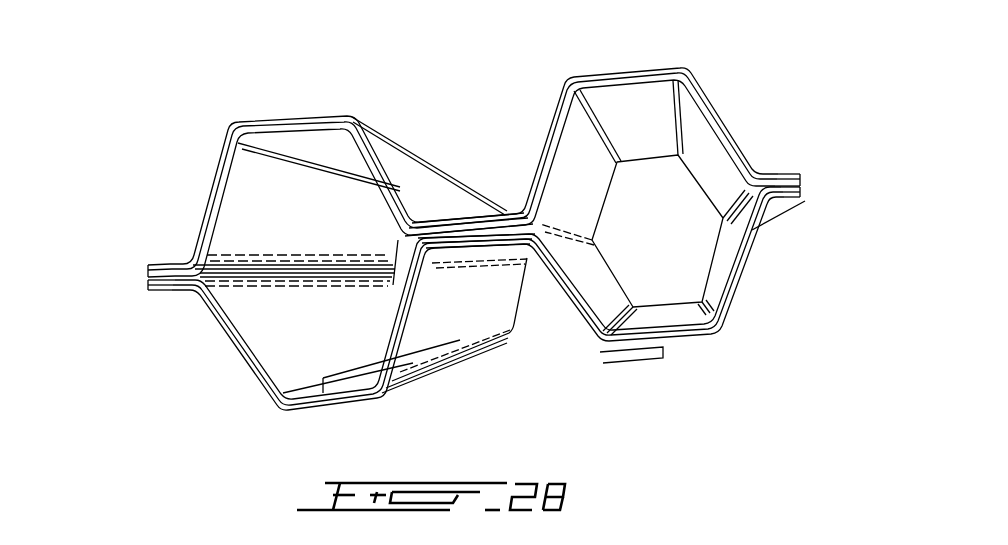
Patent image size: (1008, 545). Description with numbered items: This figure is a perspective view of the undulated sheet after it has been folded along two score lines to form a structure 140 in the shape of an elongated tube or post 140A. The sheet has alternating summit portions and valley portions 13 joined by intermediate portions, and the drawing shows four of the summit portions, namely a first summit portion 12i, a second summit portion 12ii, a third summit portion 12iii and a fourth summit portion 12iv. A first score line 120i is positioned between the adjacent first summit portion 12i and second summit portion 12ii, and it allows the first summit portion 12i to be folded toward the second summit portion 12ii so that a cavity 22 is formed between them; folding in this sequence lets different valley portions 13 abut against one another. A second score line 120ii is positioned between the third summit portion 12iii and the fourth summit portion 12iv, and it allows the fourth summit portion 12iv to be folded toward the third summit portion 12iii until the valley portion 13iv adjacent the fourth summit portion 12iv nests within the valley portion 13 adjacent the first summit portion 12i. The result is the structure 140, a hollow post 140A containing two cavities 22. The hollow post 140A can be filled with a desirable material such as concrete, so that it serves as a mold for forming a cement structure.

The first summit portion 12i is at (697, 334).
The second summit portion 12ii is at (636, 77).
The third summit portion 12iii is at (287, 122).
The fourth summit portion 12iv is at (323, 400).
The valley portion 13 is at (469, 222).
The valley portion adjacent the fourth summit portion 13iv is at (465, 253).
The cavity 22 is at (257, 342).
The first score line 120i is at (800, 186).
The second score line 120ii is at (150, 278).
The structure 140 is at (464, 243).
The elongated tube or post 140A is at (464, 243).